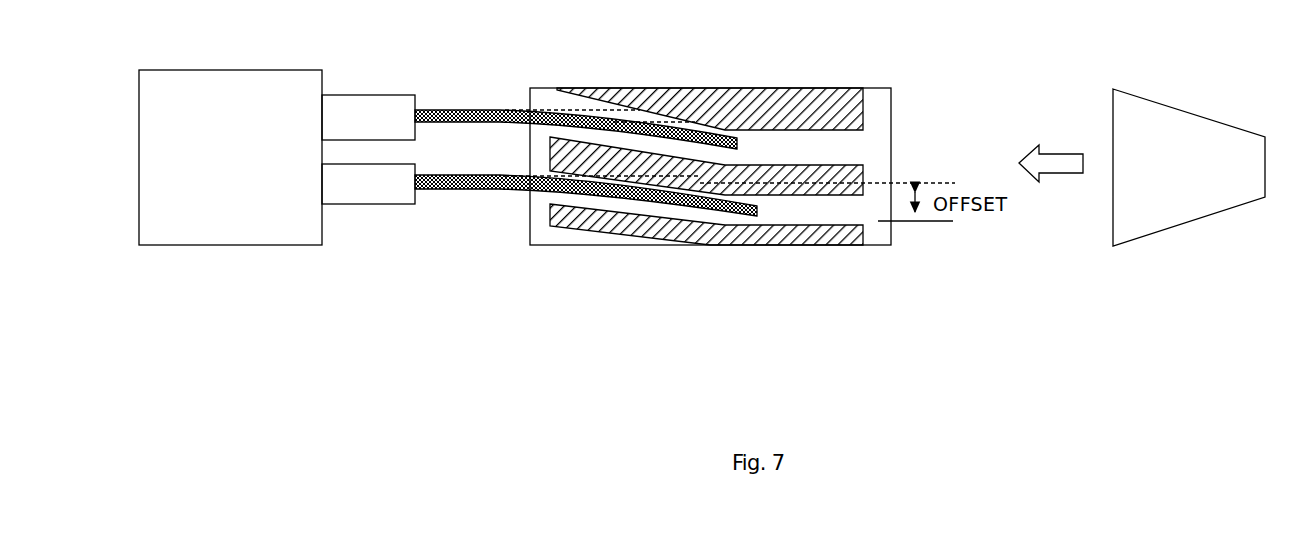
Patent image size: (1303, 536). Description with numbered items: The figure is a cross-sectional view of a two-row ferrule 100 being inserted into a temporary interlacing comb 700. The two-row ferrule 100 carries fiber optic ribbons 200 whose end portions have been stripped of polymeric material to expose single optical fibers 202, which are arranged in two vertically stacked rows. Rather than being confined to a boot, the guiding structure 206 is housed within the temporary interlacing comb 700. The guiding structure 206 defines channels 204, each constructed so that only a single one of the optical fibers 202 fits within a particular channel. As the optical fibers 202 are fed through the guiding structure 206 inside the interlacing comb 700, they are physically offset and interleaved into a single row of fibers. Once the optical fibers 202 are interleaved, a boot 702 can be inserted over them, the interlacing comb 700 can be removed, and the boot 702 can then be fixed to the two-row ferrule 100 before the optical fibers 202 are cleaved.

The two-row ferrule 100 is at (214, 165).
The fiber optic ribbons 200 is at (376, 99).
The optical fibers 202 is at (472, 96).
The channels 204 is at (817, 147).
The guiding structure 206 is at (716, 90).
The temporary interlacing comb 700 is at (636, 51).
The boot 702 is at (1178, 92).